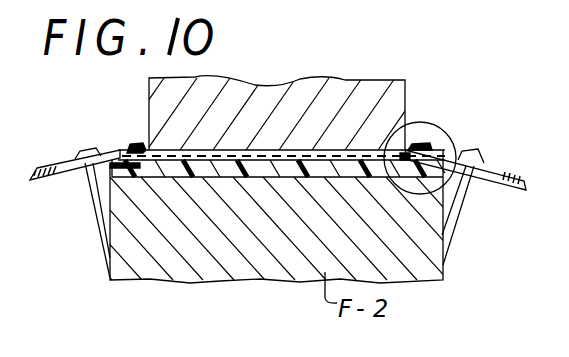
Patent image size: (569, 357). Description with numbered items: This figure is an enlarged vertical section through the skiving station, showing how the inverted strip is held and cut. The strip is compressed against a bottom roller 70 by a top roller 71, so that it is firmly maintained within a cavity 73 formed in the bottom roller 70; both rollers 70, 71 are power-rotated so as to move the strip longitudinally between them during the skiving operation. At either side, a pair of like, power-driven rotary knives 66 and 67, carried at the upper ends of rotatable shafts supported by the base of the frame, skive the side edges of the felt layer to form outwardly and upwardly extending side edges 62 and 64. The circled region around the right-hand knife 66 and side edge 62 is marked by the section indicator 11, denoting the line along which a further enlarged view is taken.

The top roller 71 is at (364, 82).
The side edge 64 is at (123, 152).
The cavity 73 is at (177, 172).
The bottom roller 70 is at (193, 267).
The rotary knife 67 is at (62, 164).
The rotary knife 66 is at (501, 169).
The side edge 62 is at (436, 159).
The view indicator arrow 11 is at (503, 0).